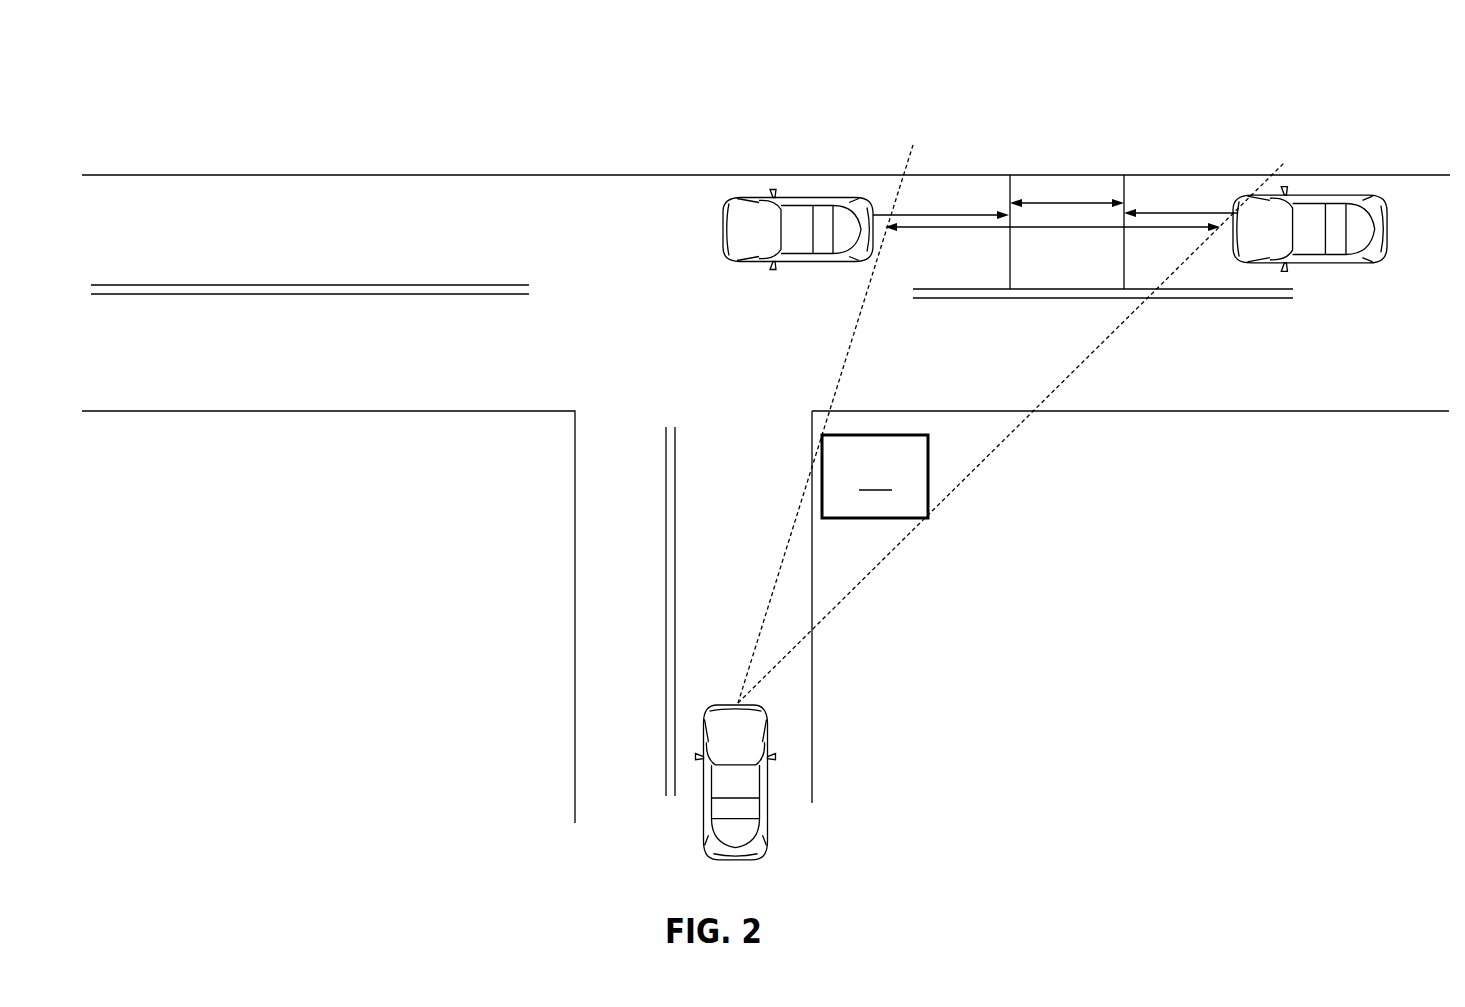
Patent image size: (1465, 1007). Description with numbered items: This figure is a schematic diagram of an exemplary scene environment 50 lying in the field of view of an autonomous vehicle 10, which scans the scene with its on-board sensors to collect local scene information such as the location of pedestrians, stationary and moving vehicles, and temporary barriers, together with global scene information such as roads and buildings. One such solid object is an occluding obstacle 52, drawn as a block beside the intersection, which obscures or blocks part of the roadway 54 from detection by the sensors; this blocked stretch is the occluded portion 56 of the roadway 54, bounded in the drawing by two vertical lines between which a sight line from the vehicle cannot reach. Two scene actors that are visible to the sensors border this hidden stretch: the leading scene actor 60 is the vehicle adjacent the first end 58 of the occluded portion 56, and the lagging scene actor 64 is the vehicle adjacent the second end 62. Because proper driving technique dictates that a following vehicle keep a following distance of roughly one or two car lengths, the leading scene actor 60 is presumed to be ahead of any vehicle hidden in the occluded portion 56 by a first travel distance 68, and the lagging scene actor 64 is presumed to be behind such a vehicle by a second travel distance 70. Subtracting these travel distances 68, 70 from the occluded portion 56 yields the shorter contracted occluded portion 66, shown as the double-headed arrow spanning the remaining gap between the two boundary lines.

The autonomous vehicle 10 is at (743, 802).
The scene environment 50 is at (184, 117).
The occluding obstacle 52 is at (875, 476).
The roadway 54 is at (824, 711).
The occluded portion 56 is at (1027, 230).
The first end 58 is at (850, 344).
The leading scene actor 60 is at (722, 226).
The second end 62 is at (1083, 362).
The lagging scene actor 64 is at (1388, 233).
The contracted occluded portion 66 is at (1088, 202).
The first travel distance 68 is at (938, 212).
The second travel distance 70 is at (1166, 212).